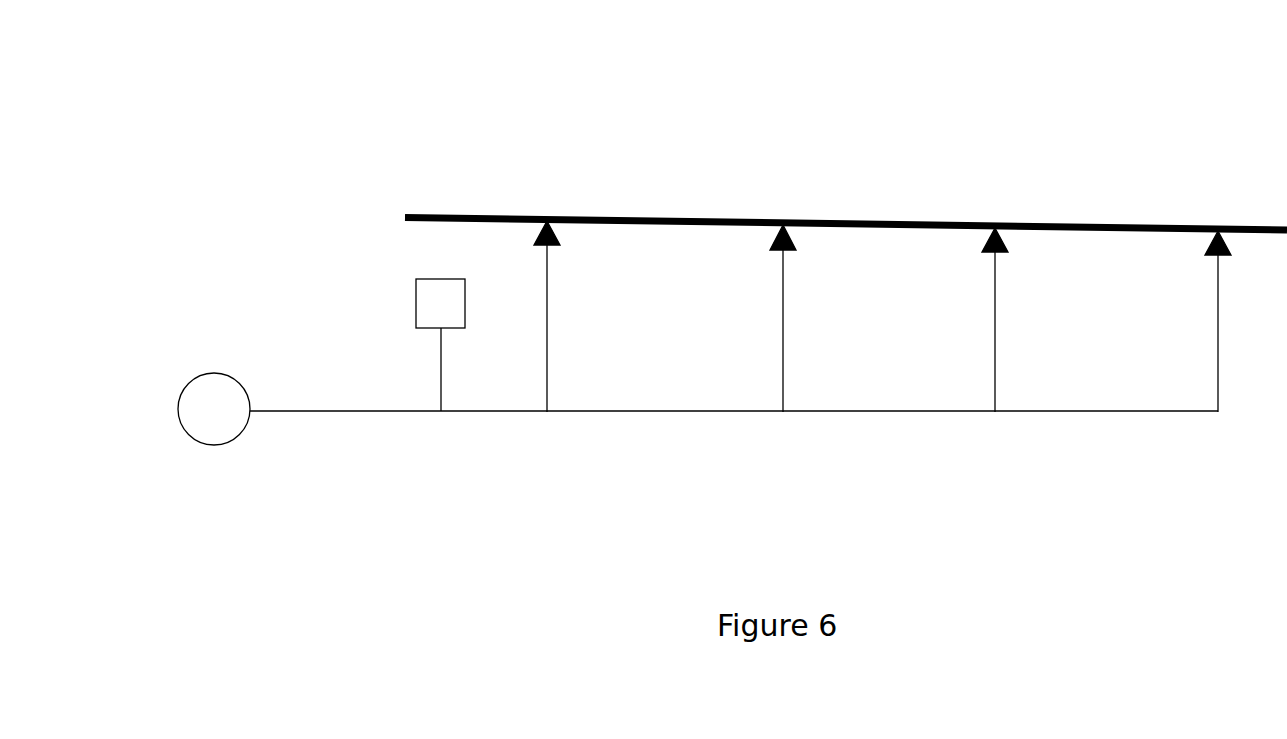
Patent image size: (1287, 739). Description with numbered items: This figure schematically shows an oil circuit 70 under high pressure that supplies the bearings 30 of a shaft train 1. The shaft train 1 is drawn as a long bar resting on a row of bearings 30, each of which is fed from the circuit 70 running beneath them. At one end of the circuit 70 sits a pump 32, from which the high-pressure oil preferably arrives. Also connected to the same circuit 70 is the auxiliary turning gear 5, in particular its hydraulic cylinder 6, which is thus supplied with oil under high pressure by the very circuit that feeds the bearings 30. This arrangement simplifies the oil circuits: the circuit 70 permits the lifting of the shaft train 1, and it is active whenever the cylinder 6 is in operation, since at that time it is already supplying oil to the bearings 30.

The shaft train 1 is at (846, 150).
The bearings 30 is at (552, 210).
The oil circuit 70 is at (734, 465).
The pump 32 is at (222, 453).
The hydraulic cylinder 6 is at (412, 306).
The auxiliary turning gear 5 is at (359, 369).